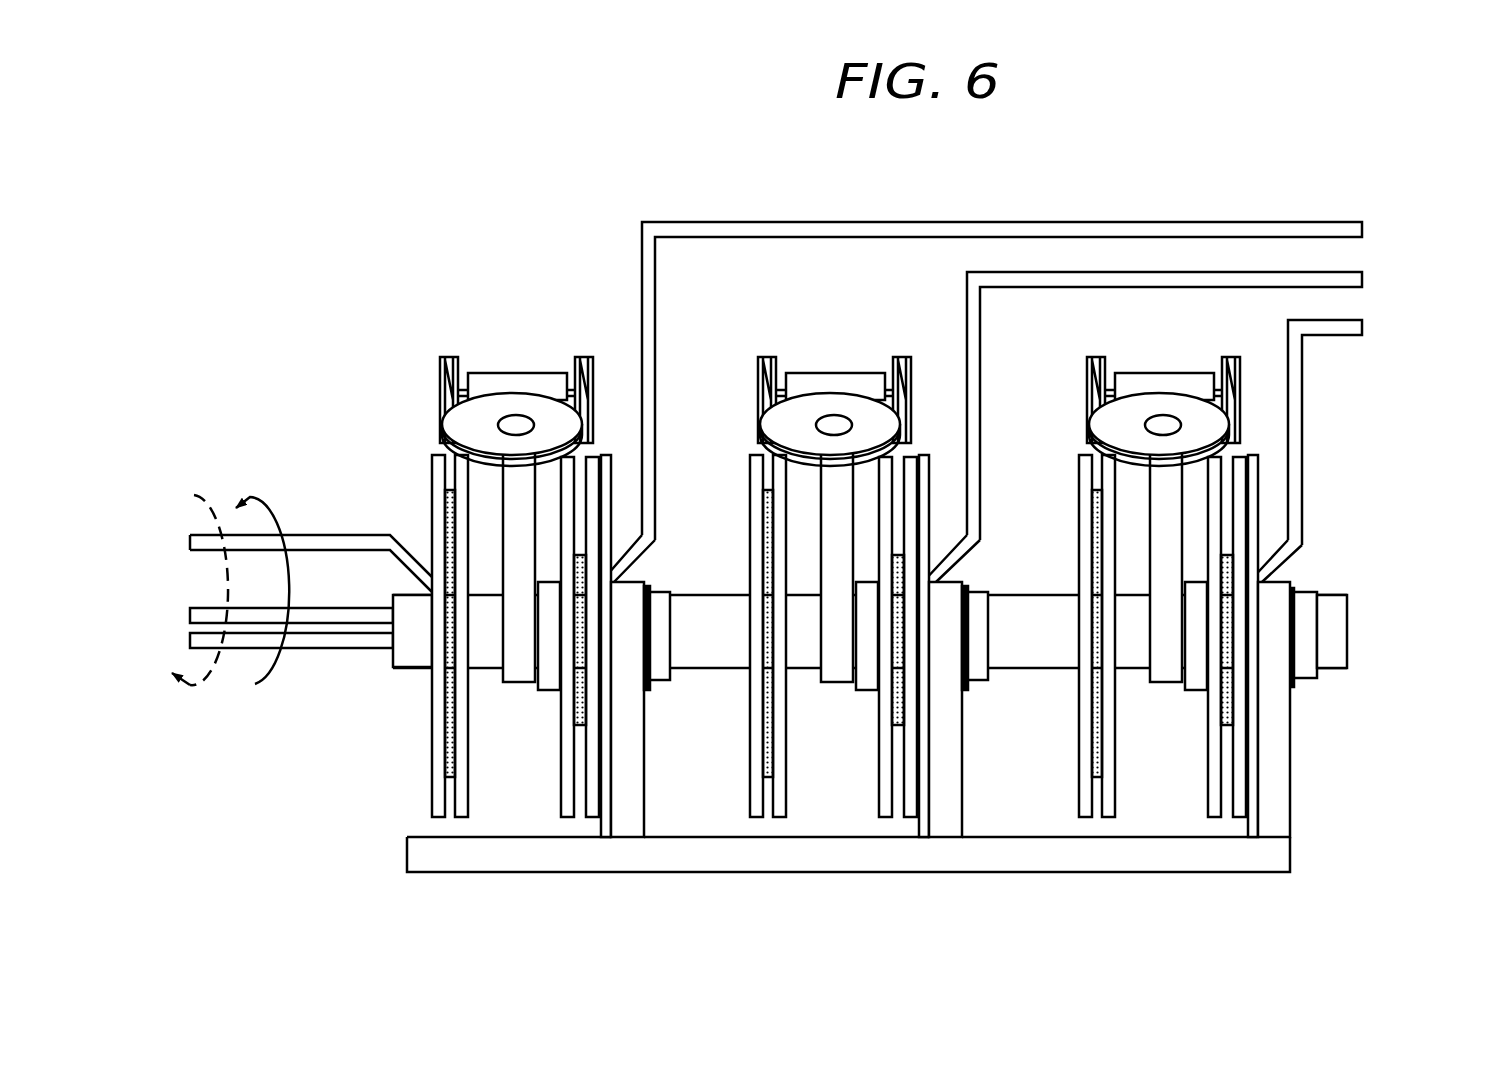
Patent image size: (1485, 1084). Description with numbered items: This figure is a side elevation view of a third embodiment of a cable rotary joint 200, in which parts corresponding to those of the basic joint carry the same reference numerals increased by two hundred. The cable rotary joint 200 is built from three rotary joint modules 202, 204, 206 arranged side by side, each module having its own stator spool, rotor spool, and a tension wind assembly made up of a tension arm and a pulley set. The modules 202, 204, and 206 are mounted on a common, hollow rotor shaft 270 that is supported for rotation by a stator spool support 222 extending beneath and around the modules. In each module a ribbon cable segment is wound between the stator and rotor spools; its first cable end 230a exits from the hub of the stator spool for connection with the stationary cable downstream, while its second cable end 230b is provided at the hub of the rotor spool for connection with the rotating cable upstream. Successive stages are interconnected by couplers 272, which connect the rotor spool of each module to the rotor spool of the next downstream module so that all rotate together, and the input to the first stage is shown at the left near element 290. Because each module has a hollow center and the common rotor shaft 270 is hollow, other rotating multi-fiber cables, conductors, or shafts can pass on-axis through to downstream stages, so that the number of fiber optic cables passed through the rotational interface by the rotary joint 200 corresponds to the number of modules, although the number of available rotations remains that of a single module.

The cable rotary joint 200 is at (456, 241).
The rotary joint module 202 is at (413, 378).
The rotary joint module 204 is at (745, 382).
The rotary joint module 206 is at (1077, 382).
The stator spool support 222 is at (921, 547).
The first cable end 230a is at (1295, 557).
The second cable end 230b is at (393, 557).
The hollow rotor shaft 270 is at (1348, 638).
The coupler 272 is at (710, 668).
The input coupling 290 is at (406, 665).